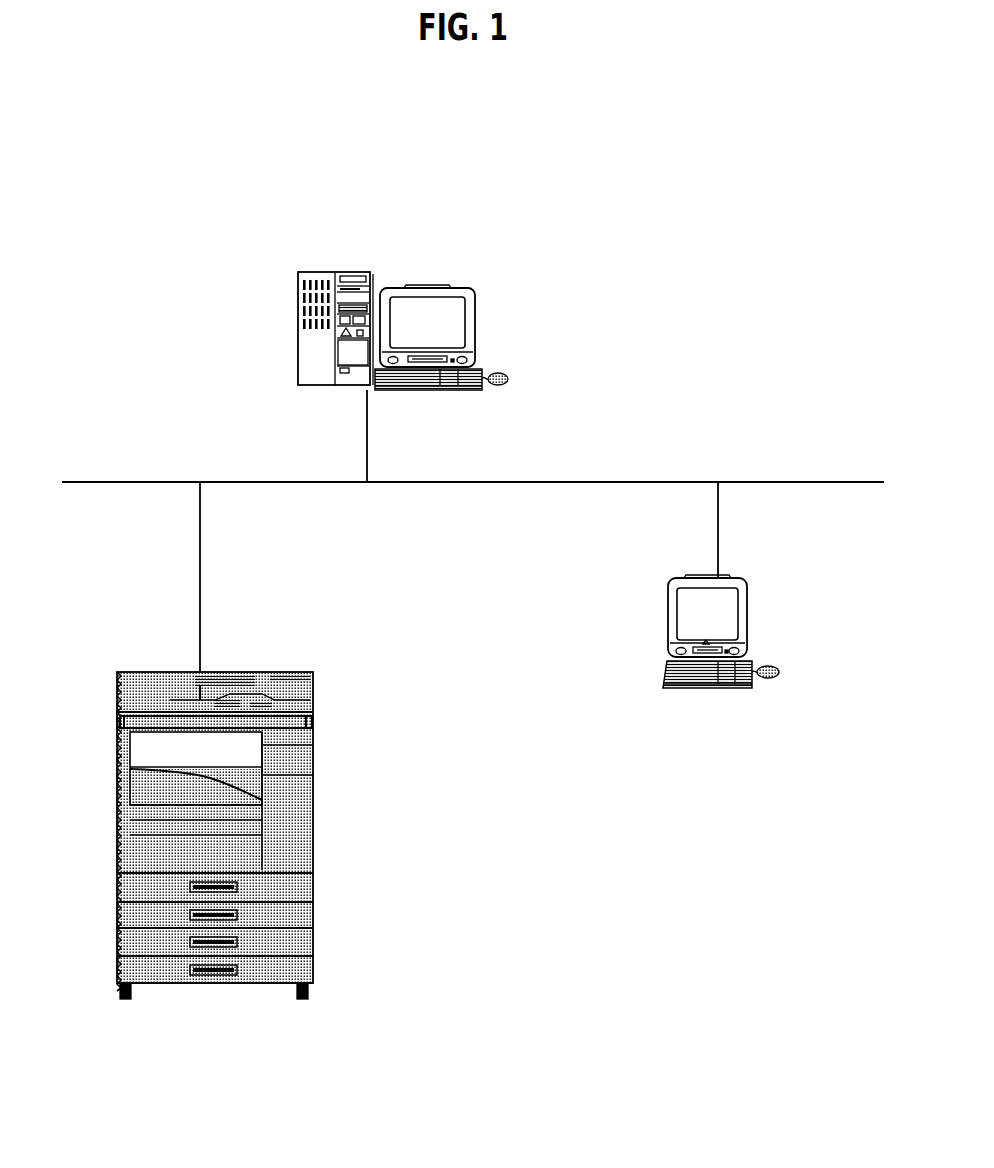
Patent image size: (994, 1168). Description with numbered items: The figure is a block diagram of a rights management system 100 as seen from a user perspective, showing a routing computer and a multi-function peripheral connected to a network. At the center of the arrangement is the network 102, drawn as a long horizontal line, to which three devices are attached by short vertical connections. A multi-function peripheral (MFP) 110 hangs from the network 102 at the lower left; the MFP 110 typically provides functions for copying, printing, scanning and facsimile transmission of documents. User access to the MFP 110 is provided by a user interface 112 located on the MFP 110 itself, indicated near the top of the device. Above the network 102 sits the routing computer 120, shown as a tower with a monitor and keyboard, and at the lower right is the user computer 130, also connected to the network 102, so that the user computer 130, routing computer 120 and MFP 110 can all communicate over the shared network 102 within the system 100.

The system 100 is at (704, 208).
The network 102 is at (604, 482).
The multi-function peripheral 110 is at (203, 810).
The user interface 112 is at (124, 720).
The routing computer 120 is at (298, 362).
The user computer 130 is at (666, 678).